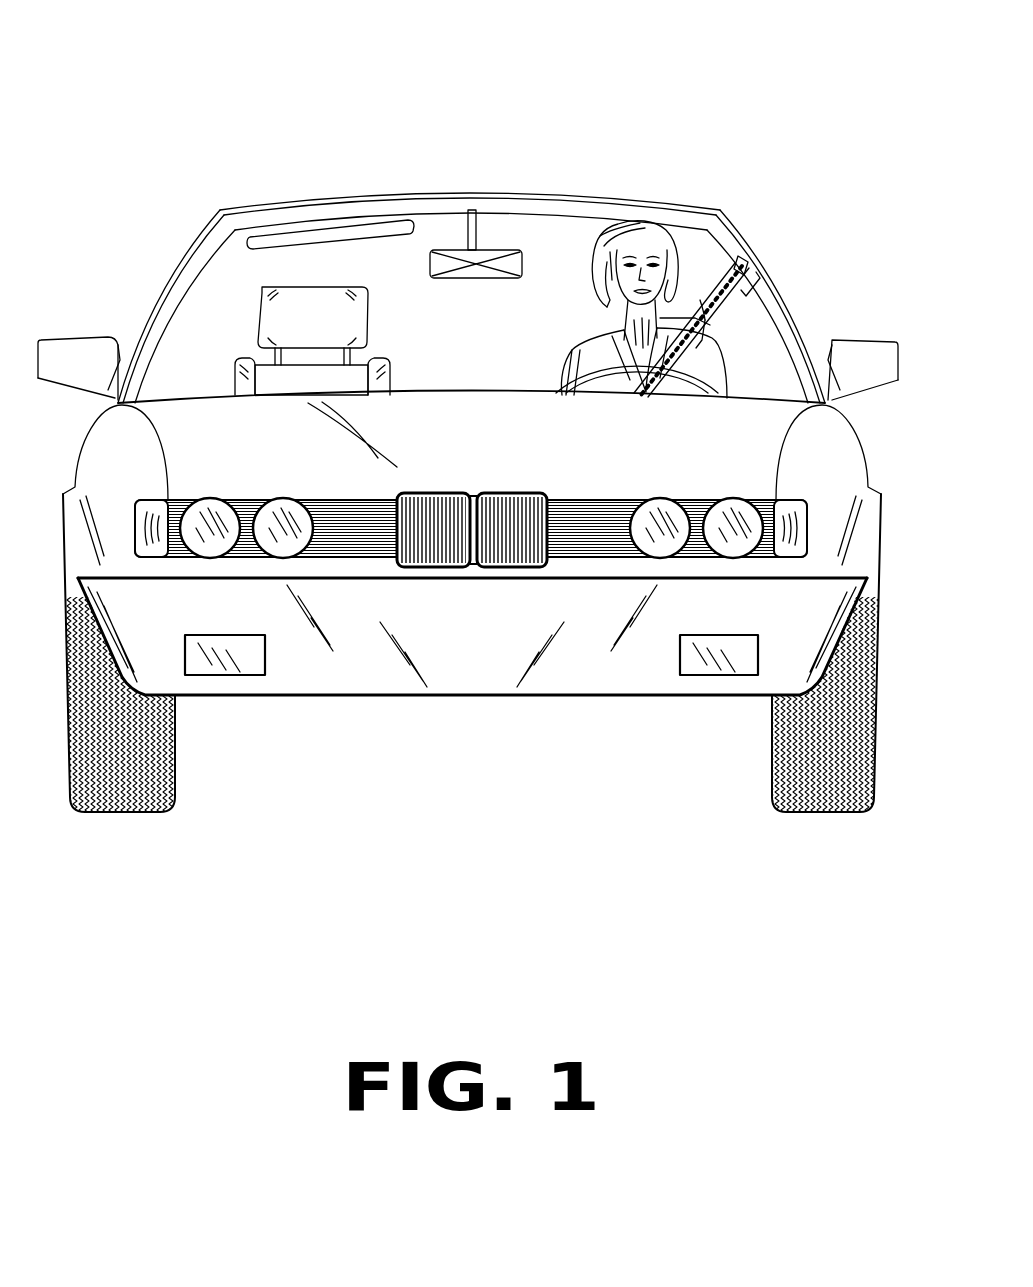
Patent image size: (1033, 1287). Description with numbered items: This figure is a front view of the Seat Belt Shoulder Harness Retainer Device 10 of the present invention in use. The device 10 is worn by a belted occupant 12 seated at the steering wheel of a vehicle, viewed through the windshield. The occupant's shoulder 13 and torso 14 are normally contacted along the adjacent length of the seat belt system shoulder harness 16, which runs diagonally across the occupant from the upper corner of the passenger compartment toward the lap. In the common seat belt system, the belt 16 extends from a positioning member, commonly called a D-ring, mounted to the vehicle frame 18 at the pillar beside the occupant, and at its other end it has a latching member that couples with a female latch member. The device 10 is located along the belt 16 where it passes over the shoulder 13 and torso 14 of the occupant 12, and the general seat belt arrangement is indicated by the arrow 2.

The seat belt shoulder harness retainer device 10 is at (803, 214).
The seat belt system 2 is at (730, 322).
The belted occupant 12 is at (612, 229).
The shoulder 13 is at (700, 320).
The torso 14 is at (610, 328).
The shoulder harness 16 is at (746, 296).
The vehicle frame 18 is at (740, 262).